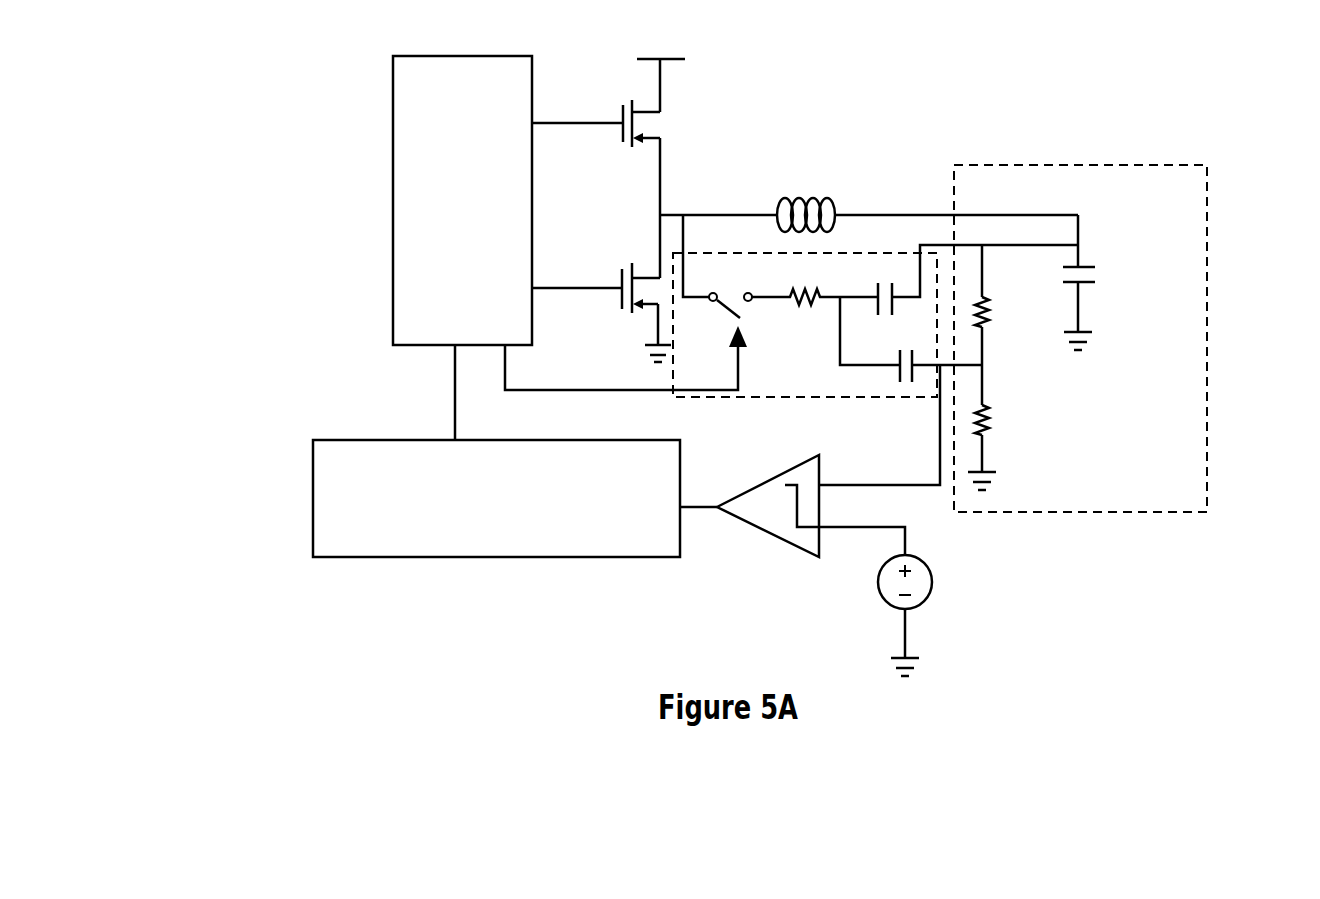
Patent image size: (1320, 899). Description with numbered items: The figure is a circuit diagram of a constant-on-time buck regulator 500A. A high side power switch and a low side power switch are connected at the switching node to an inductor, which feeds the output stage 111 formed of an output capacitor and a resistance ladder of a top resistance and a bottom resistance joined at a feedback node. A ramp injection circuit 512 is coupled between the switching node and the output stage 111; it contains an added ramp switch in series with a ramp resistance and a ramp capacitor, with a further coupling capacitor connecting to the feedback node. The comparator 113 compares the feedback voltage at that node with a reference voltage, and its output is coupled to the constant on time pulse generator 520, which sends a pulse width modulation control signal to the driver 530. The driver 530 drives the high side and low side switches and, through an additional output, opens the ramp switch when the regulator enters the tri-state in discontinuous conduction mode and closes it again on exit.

The constant-on-time buck regulator 500A is at (242, 602).
The driver 530 is at (392, 127).
The generator 520 is at (313, 467).
The ramp injection circuit 512 is at (778, 397).
The output stage 111 is at (1207, 235).
The comparator 113 is at (768, 533).